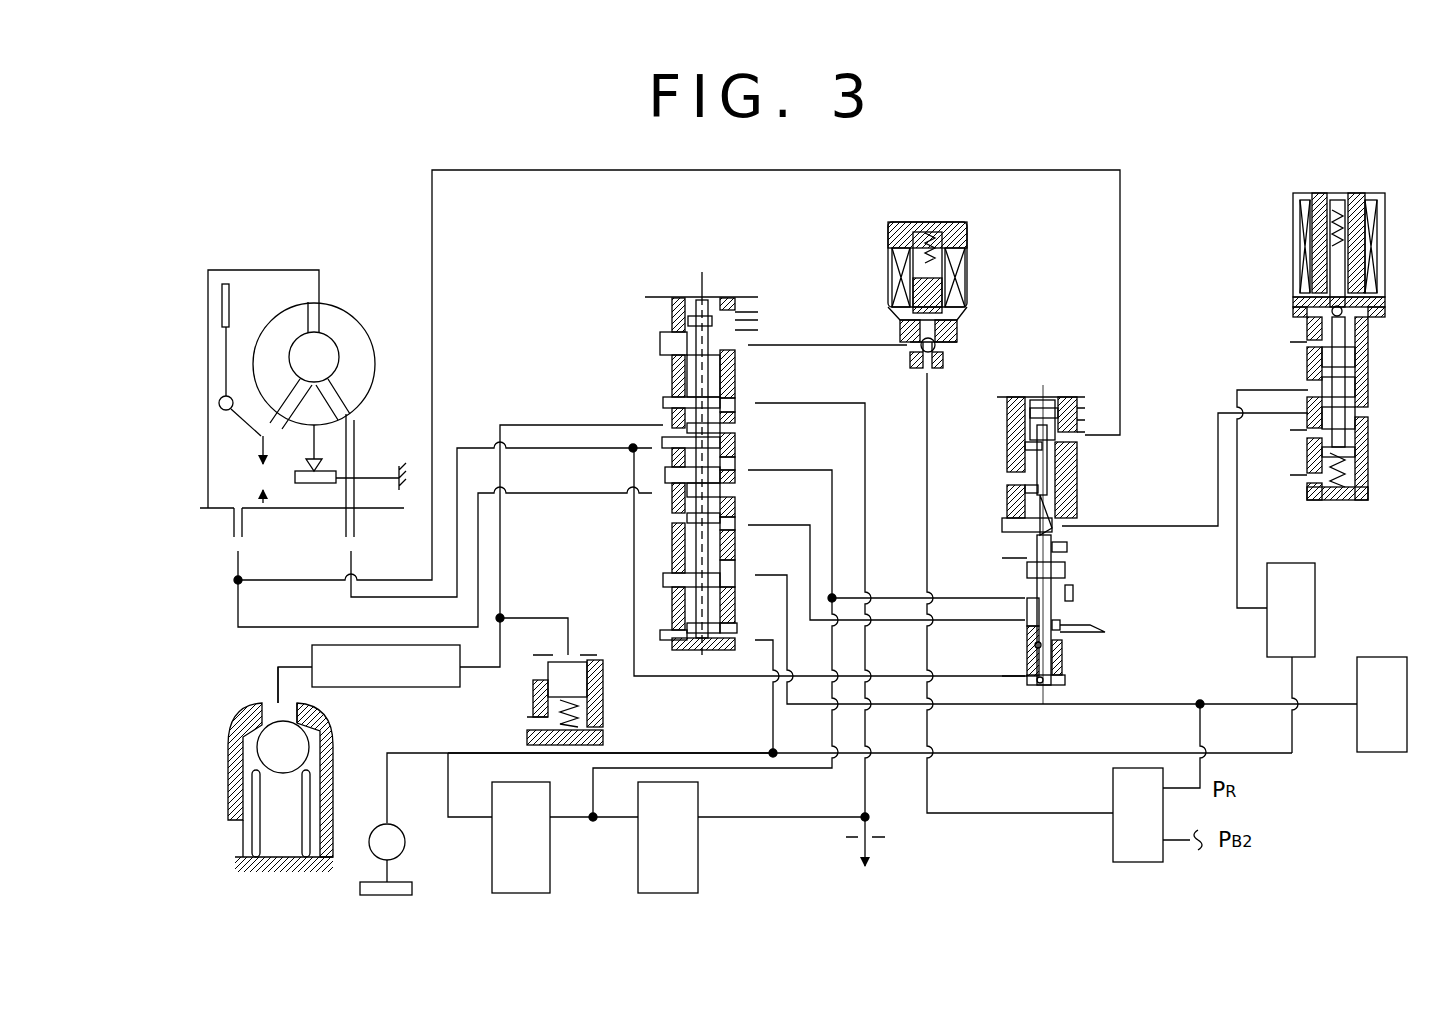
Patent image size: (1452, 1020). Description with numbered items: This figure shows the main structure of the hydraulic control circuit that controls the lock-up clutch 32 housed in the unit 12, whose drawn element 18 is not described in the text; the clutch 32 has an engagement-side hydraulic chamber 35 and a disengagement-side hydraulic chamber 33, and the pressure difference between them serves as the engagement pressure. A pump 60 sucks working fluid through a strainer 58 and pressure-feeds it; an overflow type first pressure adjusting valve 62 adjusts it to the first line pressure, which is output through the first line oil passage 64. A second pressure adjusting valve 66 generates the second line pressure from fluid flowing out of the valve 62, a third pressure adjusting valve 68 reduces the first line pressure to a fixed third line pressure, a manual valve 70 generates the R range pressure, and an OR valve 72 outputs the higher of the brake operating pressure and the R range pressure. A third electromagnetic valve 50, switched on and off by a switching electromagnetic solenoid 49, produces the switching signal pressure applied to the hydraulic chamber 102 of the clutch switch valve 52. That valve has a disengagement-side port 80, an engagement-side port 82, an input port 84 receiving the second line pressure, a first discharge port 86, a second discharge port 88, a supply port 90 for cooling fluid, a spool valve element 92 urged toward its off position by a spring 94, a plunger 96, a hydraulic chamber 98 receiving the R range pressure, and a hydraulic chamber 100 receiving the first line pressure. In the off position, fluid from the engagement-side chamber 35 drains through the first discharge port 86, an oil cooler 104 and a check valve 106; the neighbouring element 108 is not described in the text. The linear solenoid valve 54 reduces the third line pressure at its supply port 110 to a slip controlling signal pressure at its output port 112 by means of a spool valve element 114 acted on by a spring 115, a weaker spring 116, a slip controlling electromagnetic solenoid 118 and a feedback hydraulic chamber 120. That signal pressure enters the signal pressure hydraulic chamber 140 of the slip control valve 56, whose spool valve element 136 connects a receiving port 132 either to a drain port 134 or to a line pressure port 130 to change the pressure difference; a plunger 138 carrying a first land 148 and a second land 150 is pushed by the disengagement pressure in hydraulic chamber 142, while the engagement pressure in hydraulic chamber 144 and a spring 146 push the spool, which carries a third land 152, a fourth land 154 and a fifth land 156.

The shift switch 12 is at (278, 397).
The rotary member 18 is at (345, 318).
The lock-up clutch 32 is at (222, 310).
The disengagement-side hydraulic chamber 33 is at (236, 472).
The engagement-side hydraulic chamber 35 is at (240, 270).
The switching electromagnetic solenoid 49 is at (958, 278).
The third electromagnetic valve 50 is at (968, 271).
The clutch switch valve 52 is at (711, 455).
The linear solenoid valve 54 is at (1328, 341).
The slip control valve 56 is at (1080, 525).
The strainer 58 is at (392, 888).
The pump 60 is at (395, 836).
The first pressure adjusting valve 62 is at (537, 866).
The first line oil passage 64 is at (602, 752).
The second pressure adjusting valve 66 is at (678, 860).
The third pressure adjusting valve 68 is at (1300, 600).
The manual valve 70 is at (1378, 670).
The OR valve 72 is at (1122, 792).
The disengagement-side port 80 is at (665, 493).
The engagement-side port 82 is at (662, 448).
The input port 84 is at (737, 466).
The first discharge port 86 is at (663, 412).
The second discharge port 88 is at (737, 525).
The supply port 90 is at (737, 405).
The spool valve element 92 is at (692, 383).
The spring 94 is at (737, 572).
The plunger 96 is at (742, 620).
The hydraulic chamber 98 is at (665, 580).
The hydraulic chamber 100 is at (668, 640).
The hydraulic chamber 102 is at (662, 342).
The oil cooler 104 is at (352, 677).
The check valve 106 is at (230, 718).
The check valve 108 is at (570, 648).
The supply port 110 is at (1308, 385).
The output port 112 is at (1308, 435).
The spool valve element 114 is at (1345, 417).
The spring 115 is at (1337, 205).
The spring 116 is at (1355, 497).
The slip controlling electromagnetic solenoid 118 is at (1372, 282).
The hydraulic chamber 120 is at (1310, 360).
The line pressure port 130 is at (1025, 595).
The receiving port 132 is at (1027, 618).
The drain port 134 is at (1090, 640).
The spool valve element 136 is at (1066, 570).
The plunger 138 is at (1050, 488).
The signal pressure hydraulic chamber 140 is at (1005, 532).
The hydraulic chamber 142 is at (1010, 432).
The hydraulic chamber 144 is at (1066, 683).
The spring 146 is at (1064, 653).
The first land 148 is at (1027, 447).
The second land 150 is at (1027, 490).
The third land 152 is at (1068, 548).
The fourth land 154 is at (1074, 593).
The fifth land 156 is at (1027, 668).